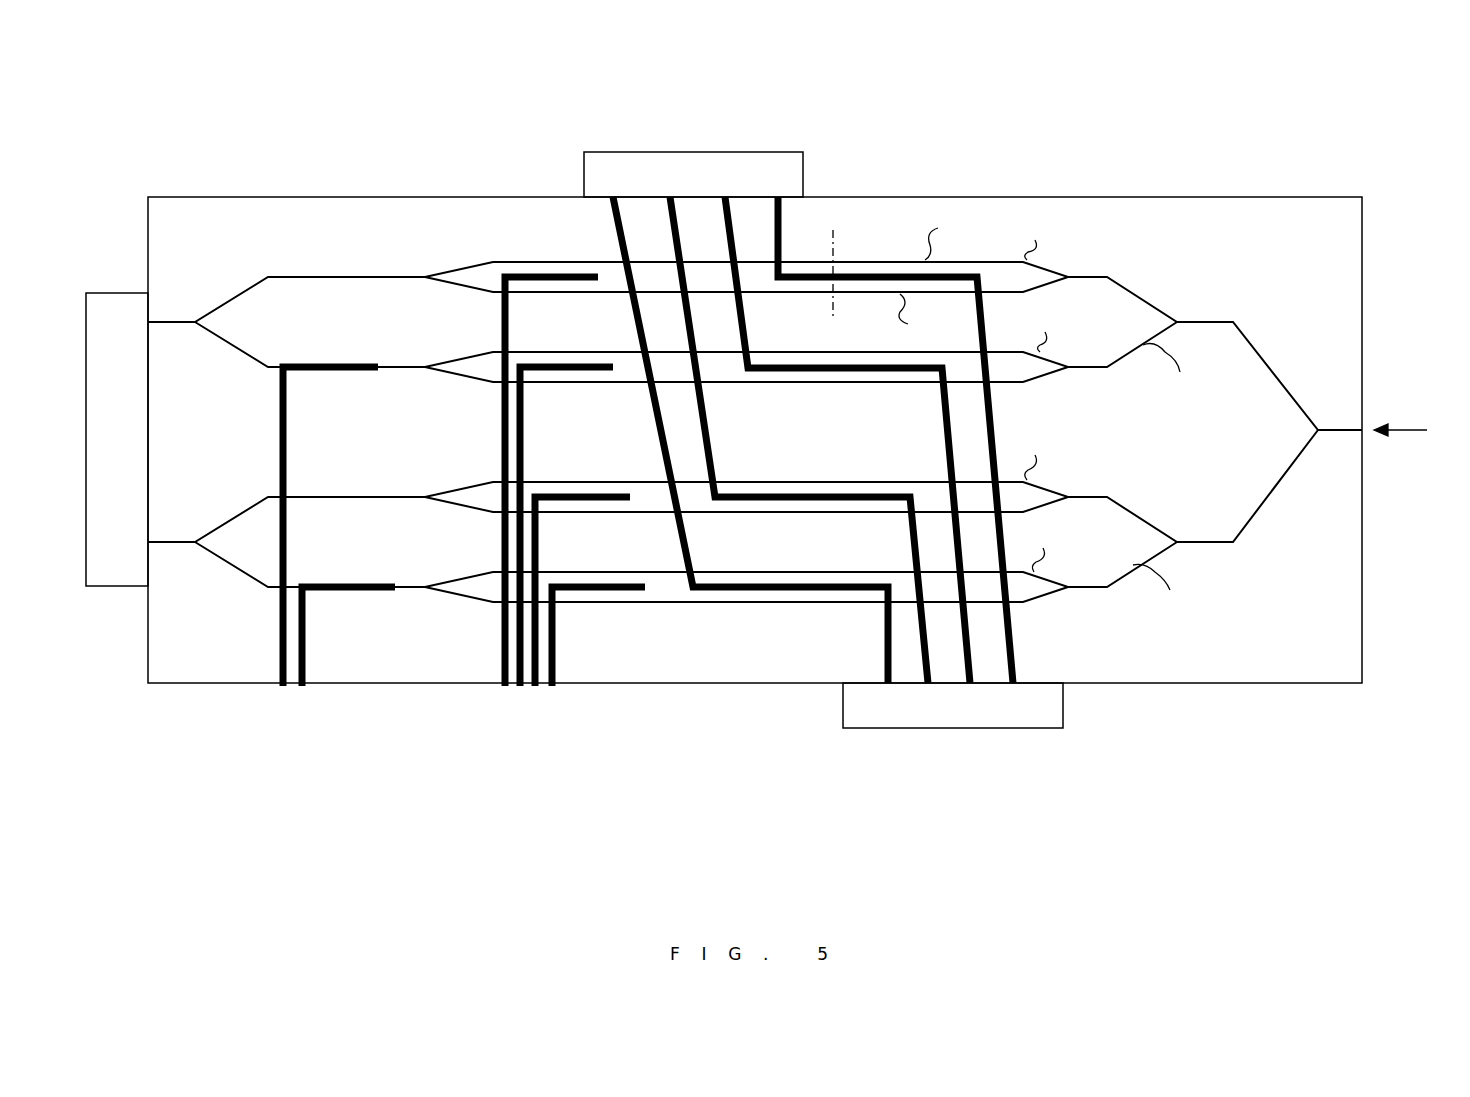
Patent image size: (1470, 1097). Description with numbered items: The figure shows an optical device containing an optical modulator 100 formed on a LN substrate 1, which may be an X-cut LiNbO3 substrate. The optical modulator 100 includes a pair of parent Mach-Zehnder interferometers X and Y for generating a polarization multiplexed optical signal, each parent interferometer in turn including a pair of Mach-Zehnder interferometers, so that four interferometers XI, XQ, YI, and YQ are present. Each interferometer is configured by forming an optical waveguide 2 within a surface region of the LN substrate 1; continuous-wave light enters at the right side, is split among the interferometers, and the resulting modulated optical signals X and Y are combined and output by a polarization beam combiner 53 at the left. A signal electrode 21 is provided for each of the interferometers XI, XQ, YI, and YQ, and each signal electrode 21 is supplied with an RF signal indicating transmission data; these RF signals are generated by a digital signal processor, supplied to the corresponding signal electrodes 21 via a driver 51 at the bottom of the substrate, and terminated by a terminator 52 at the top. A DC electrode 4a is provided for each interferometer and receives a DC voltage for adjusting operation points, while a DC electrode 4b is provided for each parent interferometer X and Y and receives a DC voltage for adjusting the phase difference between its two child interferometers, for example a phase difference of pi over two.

The optical modulator 100 is at (340, 108).
The LN substrate 1 is at (972, 197).
The optical waveguide 2 is at (1205, 545).
The signal electrode 21 is at (870, 275).
The DC electrode 4a is at (488, 698).
The DC electrode 4b is at (255, 698).
The driver 51 is at (955, 730).
The terminator 52 is at (692, 150).
The polarization beam combiner 53 is at (121, 590).